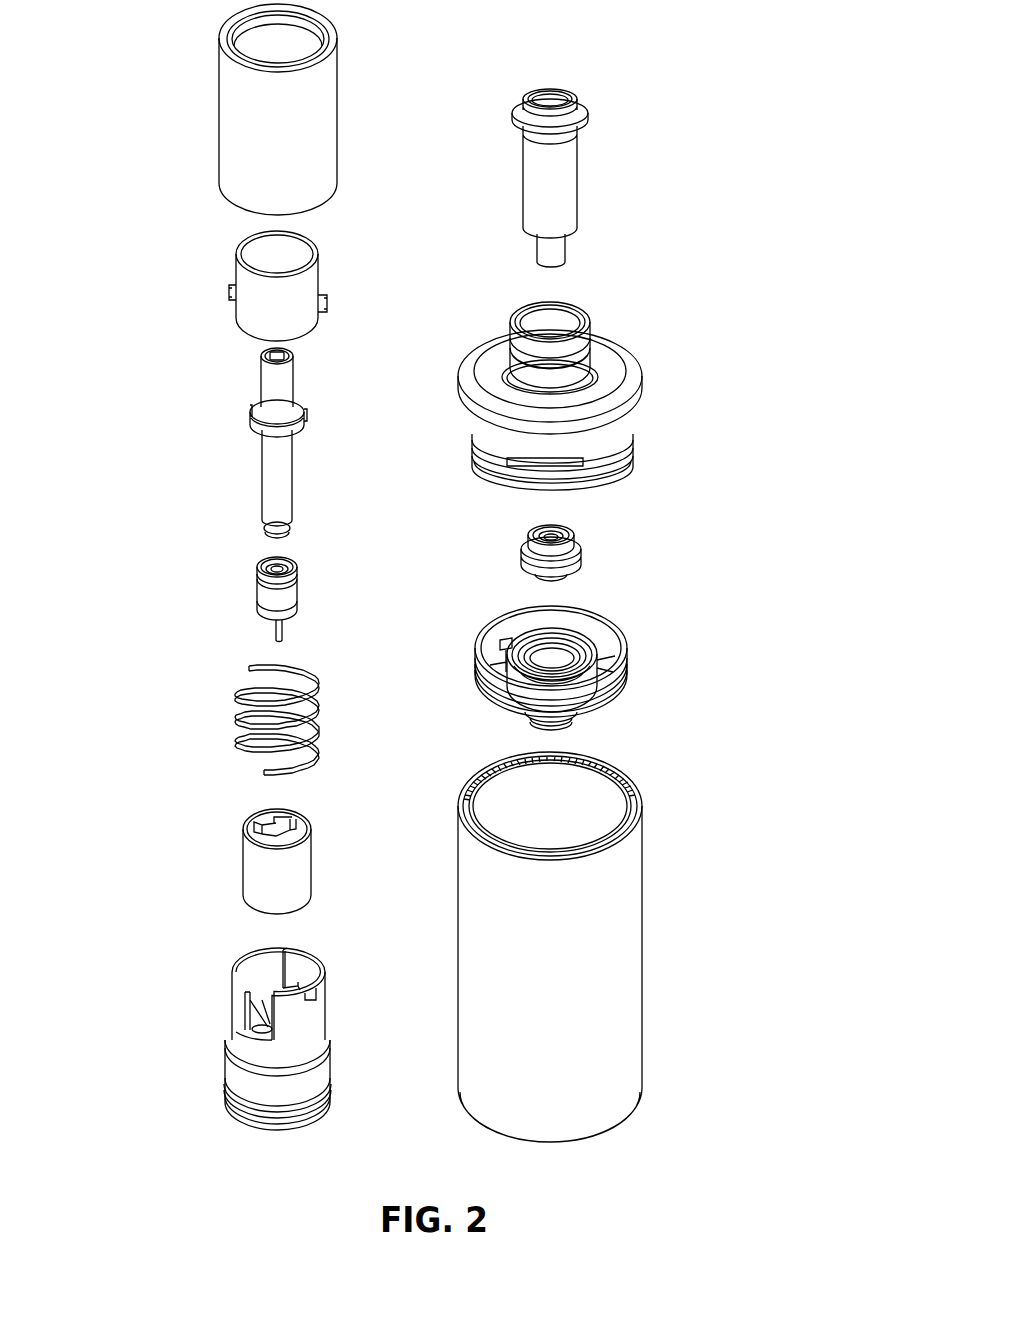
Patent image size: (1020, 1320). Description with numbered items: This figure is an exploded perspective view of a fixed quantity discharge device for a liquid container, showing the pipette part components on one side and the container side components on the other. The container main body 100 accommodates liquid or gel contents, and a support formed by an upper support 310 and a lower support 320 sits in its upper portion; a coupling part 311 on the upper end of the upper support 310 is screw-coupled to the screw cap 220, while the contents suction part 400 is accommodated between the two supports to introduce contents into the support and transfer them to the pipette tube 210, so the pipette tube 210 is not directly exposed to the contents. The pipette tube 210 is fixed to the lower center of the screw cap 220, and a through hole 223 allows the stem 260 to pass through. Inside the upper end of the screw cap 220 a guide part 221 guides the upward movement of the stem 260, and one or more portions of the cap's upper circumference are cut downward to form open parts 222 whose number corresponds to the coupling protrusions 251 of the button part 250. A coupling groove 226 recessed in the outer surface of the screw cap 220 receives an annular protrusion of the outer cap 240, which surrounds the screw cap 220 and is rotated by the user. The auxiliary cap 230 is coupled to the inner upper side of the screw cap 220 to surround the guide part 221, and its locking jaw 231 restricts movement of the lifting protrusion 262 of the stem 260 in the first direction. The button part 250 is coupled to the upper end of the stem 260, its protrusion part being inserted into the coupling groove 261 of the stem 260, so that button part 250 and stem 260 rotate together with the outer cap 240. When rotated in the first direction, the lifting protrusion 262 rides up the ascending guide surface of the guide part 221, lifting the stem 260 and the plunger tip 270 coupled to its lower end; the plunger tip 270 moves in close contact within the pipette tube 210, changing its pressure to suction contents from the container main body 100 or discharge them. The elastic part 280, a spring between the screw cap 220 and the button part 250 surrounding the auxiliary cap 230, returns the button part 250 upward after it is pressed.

The container main body 100 is at (656, 868).
The pipette tube 210 is at (582, 168).
The screw cap 220 is at (215, 1036).
The guide part 221 is at (288, 983).
The open part 222 is at (290, 966).
The through hole 223 is at (268, 1027).
The coupling groove 226 is at (230, 1106).
The auxiliary cap 230 is at (219, 850).
The locking jaw 231 is at (252, 824).
The outer cap 240 is at (219, 98).
The button part 250 is at (224, 278).
The coupling protrusion 251 is at (229, 293).
The stem 260 is at (227, 443).
The coupling groove 261 is at (263, 357).
The lifting protrusion 262 is at (251, 408).
The plunger tip 270 is at (257, 596).
The elastic part 280 is at (233, 714).
The upper support 310 is at (614, 383).
The coupling part 311 is at (583, 348).
The lower support 320 is at (641, 660).
The contents suction part 400 is at (591, 543).